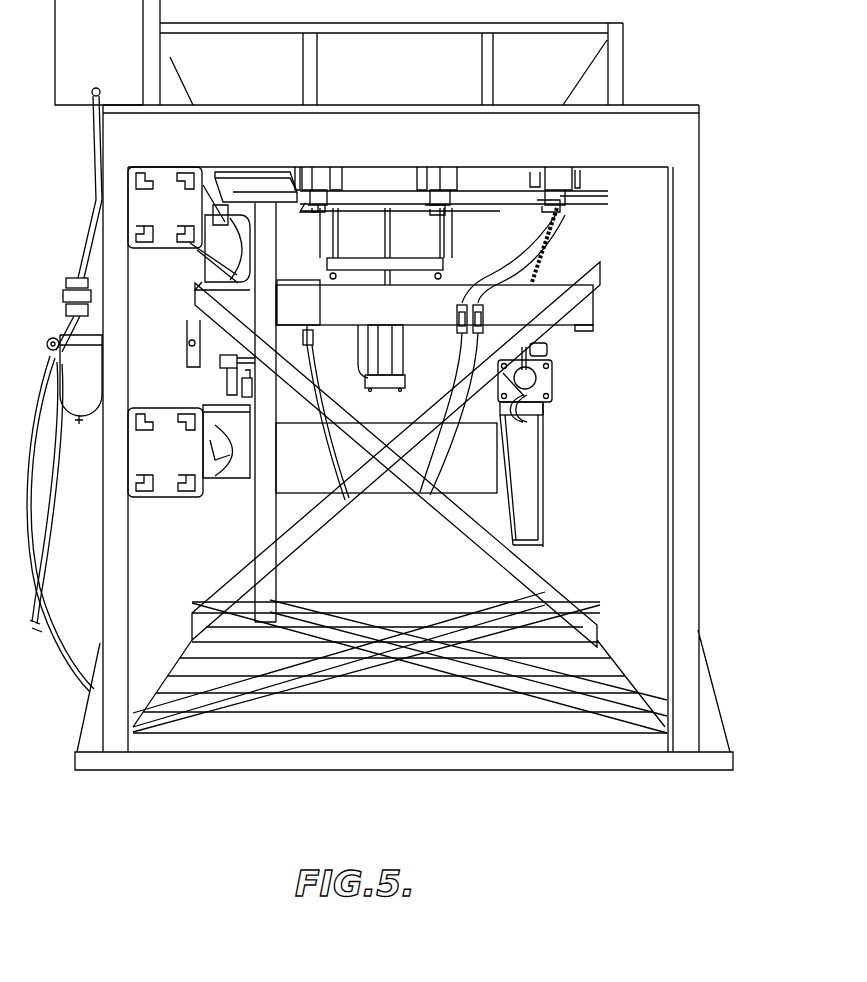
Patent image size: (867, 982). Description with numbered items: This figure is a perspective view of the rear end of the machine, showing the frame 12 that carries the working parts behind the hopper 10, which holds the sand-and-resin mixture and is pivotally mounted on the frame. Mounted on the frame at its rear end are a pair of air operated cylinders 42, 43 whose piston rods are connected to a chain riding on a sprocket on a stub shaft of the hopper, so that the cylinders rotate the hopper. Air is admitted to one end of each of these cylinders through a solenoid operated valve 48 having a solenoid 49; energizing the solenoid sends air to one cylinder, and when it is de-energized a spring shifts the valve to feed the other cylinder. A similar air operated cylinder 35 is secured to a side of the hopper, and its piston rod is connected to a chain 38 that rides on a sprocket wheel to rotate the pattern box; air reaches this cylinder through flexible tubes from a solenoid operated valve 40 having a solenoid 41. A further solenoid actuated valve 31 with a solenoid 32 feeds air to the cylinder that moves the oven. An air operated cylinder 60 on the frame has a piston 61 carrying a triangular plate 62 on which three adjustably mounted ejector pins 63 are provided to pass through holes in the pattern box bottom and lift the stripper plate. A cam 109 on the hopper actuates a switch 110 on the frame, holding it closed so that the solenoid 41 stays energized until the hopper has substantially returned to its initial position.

The hopper 10 is at (386, 458).
The frame 12 is at (699, 445).
The solenoid actuated valve 31 is at (432, 198).
The solenoid 32 is at (447, 183).
The air operated cylinder 35 is at (549, 460).
The chain 38 is at (542, 250).
The solenoid operated valve 40 is at (560, 196).
The solenoid 41 is at (572, 180).
The air operated cylinder 42 is at (165, 207).
The air operated cylinder 43 is at (165, 452).
The solenoid operated valve 48 is at (323, 203).
The solenoid 49 is at (317, 197).
The air operated cylinder 60 is at (401, 360).
The piston 61 is at (398, 273).
The triangular plate 62 is at (449, 263).
The ejector pins 63 is at (444, 230).
The cam 109 is at (222, 372).
The switch 110 is at (232, 385).